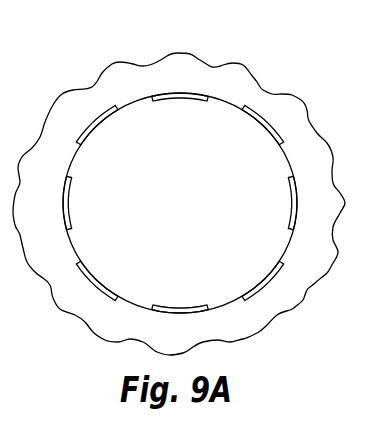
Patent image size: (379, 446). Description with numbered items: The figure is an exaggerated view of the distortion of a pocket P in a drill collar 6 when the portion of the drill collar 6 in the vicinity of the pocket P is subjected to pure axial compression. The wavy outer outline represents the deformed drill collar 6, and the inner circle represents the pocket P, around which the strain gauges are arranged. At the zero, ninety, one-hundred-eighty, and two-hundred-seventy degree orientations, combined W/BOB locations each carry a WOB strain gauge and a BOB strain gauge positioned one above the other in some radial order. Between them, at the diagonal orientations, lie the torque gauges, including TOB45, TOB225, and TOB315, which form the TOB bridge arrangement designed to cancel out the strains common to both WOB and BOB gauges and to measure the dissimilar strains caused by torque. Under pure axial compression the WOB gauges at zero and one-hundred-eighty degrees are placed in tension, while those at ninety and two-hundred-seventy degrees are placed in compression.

The drill collar 6 is at (248, 64).
The pocket P is at (283, 150).
The TOB strain gauge at 45 degree orientation TOB45 is at (262, 276).
The TOB strain gauge at 315 degree orientation TOB315 is at (96, 138).
The TOB strain gauge at 225 degree orientation TOB225 is at (104, 285).